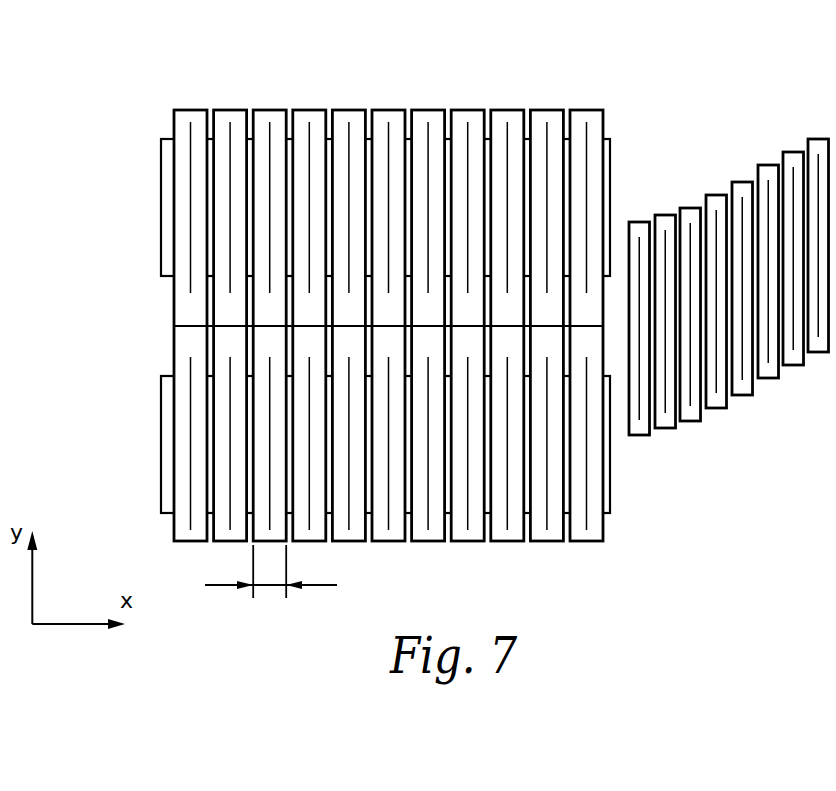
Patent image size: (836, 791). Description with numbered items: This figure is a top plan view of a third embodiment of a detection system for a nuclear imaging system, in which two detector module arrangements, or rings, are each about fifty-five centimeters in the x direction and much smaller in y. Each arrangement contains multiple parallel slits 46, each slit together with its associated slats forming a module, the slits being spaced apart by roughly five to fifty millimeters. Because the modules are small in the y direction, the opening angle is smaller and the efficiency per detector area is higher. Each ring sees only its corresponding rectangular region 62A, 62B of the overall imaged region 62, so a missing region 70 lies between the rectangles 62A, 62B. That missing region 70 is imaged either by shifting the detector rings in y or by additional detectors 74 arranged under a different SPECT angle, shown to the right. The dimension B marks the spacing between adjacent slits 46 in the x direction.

The slit 46 is at (232, 135).
The region 62 is at (305, 326).
The region 62A is at (161, 211).
The region 62B is at (161, 448).
The missing region 70 is at (154, 318).
The additional detectors 74 is at (702, 158).
The fin pitch dimension B is at (273, 582).